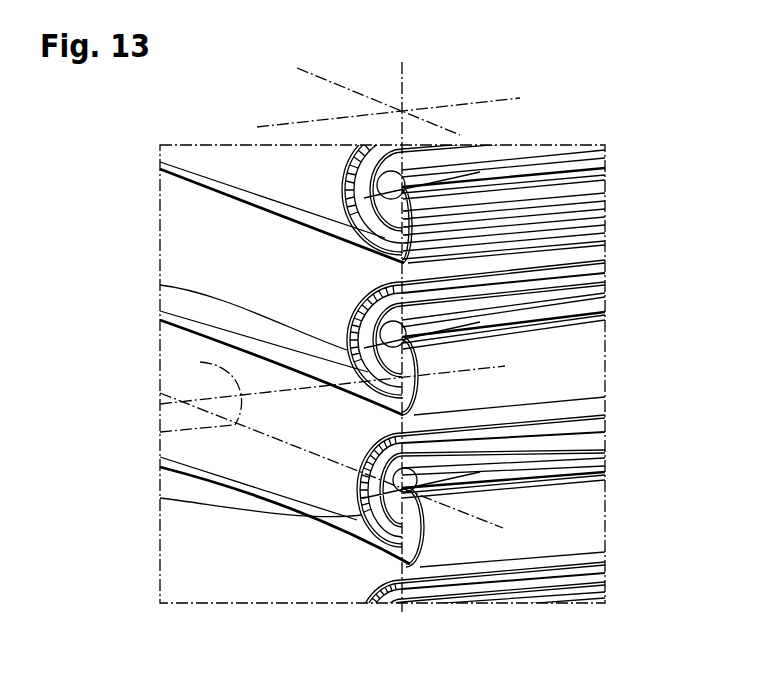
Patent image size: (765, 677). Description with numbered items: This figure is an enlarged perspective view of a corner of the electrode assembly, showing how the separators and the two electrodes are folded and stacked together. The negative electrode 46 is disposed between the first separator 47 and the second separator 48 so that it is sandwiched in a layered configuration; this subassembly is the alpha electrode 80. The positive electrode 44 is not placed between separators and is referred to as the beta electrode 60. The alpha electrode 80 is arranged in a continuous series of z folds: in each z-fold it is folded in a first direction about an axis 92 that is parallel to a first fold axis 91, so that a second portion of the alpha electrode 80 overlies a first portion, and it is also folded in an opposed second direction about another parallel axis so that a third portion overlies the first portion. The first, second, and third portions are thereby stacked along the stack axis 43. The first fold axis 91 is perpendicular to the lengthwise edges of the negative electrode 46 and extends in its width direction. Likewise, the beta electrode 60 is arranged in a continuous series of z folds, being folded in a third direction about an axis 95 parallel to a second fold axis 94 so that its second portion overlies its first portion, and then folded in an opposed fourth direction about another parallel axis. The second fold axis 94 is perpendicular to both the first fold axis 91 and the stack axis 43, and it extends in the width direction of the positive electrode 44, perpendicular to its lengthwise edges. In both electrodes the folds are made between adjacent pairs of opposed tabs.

The stack axis 43 is at (402, 78).
The positive electrode 44 is at (160, 498).
The negative electrode 46 is at (584, 440).
The first separator 47 is at (584, 417).
The second separator 48 is at (584, 458).
The beta electrode 60 is at (584, 207).
The alpha electrode 80 is at (308, 490).
The first fold axis 91 is at (325, 80).
The axis 92 is at (160, 432).
The second fold axis 94 is at (520, 98).
The axis 95 is at (200, 362).